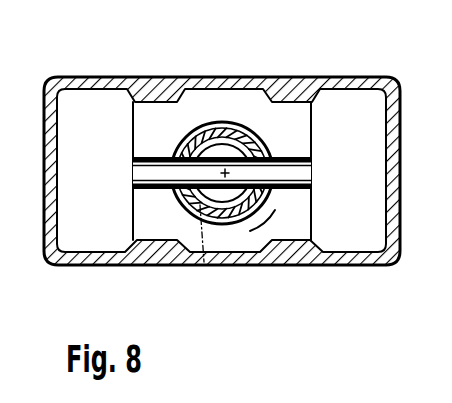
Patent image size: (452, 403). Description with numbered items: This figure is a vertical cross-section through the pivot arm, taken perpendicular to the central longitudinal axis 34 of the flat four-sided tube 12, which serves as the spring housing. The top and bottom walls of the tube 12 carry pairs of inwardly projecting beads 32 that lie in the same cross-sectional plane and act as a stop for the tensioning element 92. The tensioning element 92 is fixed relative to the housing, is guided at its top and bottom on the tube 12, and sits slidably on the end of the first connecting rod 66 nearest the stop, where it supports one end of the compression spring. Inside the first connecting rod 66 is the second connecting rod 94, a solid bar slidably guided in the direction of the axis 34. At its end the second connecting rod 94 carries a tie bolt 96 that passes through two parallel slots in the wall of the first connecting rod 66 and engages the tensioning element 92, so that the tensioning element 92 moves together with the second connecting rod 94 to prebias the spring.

The four-sided tube 12 is at (47, 267).
The inwardly projecting beads 32 is at (287, 80).
The central longitudinal axis 34 is at (203, 265).
The first connecting rod 66 is at (247, 134).
The tensioning element 92 is at (302, 139).
The second connecting rod 94 is at (267, 226).
The tie bolt 96 is at (313, 185).